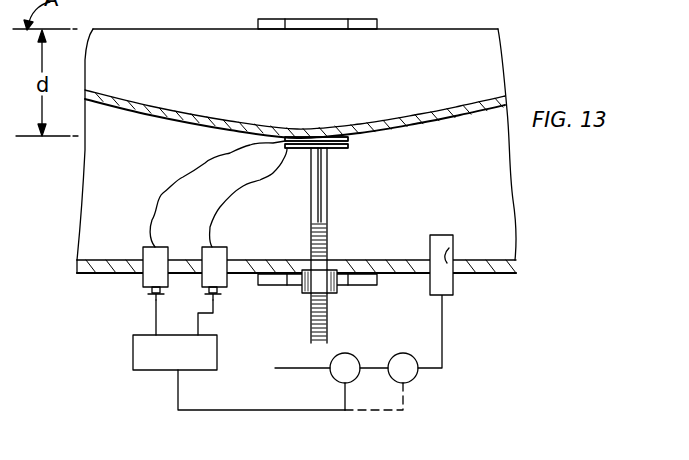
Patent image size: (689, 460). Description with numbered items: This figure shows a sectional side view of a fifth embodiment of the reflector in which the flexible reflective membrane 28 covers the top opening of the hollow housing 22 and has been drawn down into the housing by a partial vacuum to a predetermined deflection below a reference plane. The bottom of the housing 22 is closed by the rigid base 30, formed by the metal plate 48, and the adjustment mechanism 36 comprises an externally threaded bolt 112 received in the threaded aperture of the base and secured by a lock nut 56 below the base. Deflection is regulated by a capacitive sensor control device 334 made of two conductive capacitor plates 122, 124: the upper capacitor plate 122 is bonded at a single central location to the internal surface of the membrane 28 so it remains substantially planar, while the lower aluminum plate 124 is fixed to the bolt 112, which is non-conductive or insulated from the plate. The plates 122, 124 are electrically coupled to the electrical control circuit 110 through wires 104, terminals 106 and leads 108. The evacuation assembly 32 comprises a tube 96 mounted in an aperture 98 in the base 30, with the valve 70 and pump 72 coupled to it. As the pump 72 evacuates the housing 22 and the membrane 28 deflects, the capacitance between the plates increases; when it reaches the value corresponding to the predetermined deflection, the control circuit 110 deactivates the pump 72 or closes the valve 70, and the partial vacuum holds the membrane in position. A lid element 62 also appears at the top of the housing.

The hollow housing 22 is at (478, 193).
The reflective membrane 28 is at (395, 118).
The rigid base 30 is at (524, 272).
The evacuation assembly 32 is at (383, 420).
The adjustment mechanism 36 is at (334, 242).
The metal plate 48 is at (110, 268).
The lock nut 56 is at (305, 287).
The lid 62 is at (317, 14).
The valve 70 is at (417, 378).
The pump 72 is at (331, 379).
The tube 96 is at (445, 283).
The aperture 98 is at (449, 248).
The wires 104 is at (207, 160).
The terminals 106 is at (211, 255).
The leads 108 is at (197, 325).
The electrical control circuit 110 is at (133, 358).
The bolt 112 is at (327, 195).
The upper capacitor plate 122 is at (292, 142).
The lower aluminum plate 124 is at (301, 150).
The capacitive sensor control device 334 is at (360, 146).